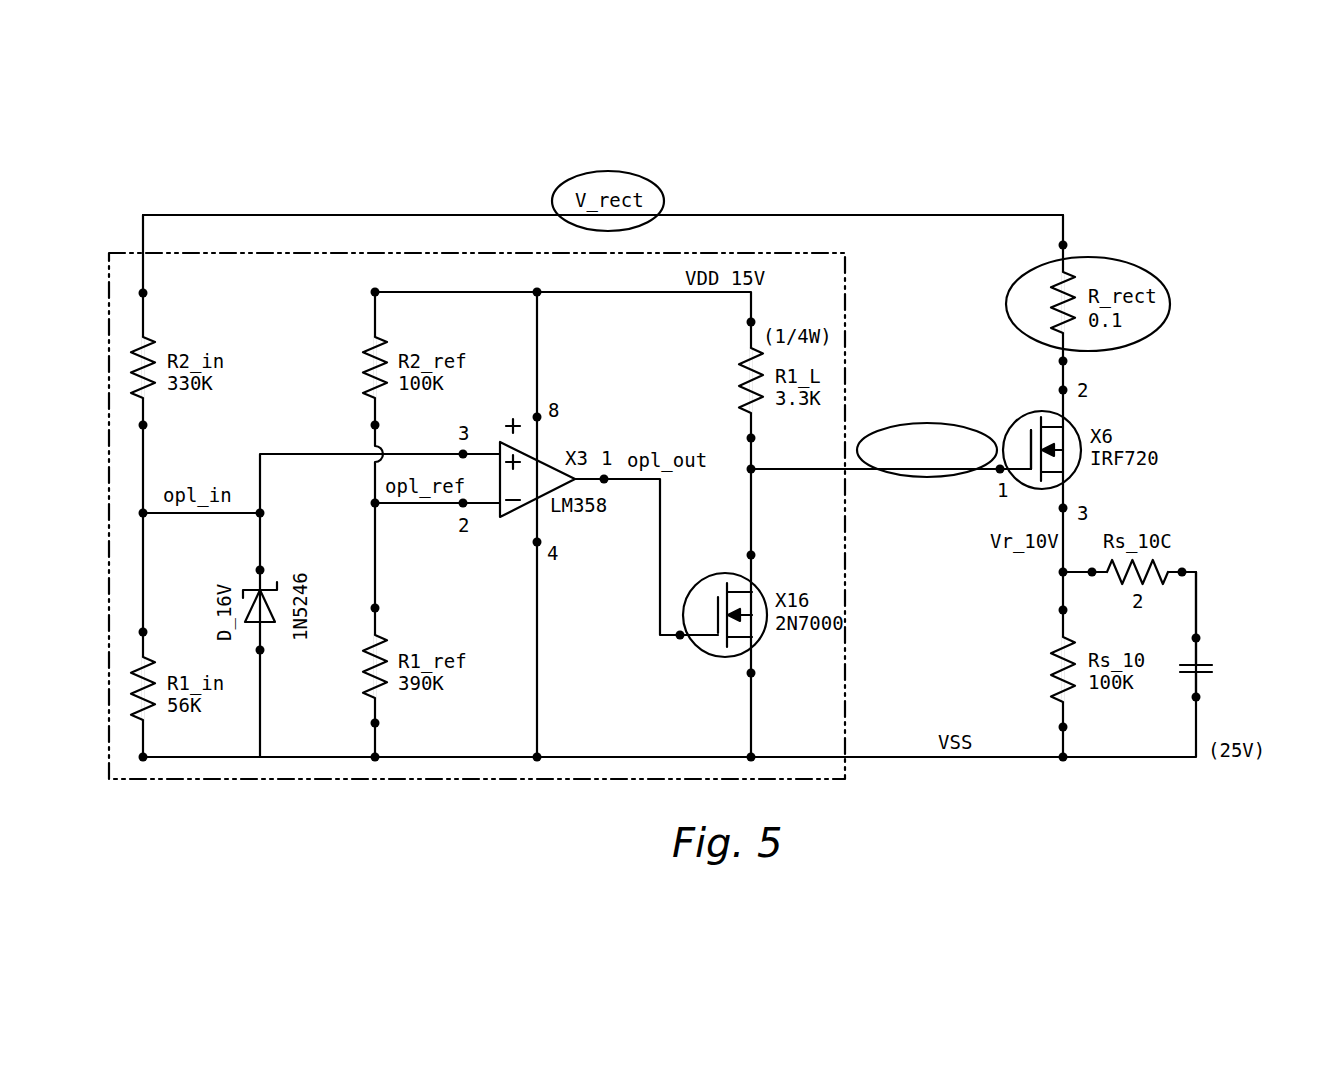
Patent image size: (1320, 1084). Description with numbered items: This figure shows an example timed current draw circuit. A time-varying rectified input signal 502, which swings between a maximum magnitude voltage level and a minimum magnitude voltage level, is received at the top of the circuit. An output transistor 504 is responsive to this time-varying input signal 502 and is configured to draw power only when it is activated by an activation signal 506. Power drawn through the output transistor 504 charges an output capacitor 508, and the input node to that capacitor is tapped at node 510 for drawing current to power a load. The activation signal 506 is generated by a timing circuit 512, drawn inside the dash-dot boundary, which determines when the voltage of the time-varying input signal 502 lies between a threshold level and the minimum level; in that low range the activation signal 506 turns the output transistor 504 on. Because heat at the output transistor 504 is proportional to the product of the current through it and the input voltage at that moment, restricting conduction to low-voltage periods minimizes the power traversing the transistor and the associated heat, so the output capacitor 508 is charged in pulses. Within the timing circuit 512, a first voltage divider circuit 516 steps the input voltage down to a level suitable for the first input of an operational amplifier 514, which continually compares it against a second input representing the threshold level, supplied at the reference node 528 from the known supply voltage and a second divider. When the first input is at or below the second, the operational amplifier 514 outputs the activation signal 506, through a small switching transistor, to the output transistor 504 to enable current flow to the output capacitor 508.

The time-varying input signal 502 is at (441, 214).
The output transistor 504 is at (1072, 425).
The activation signal 506 is at (925, 471).
The output capacitor 508 is at (1205, 664).
The tapped node 510 is at (1200, 569).
The timing circuit 512 is at (303, 256).
The operational amplifier 514 is at (546, 462).
The first voltage divider circuit 516 is at (213, 515).
The reference node opl_ref 528 is at (377, 528).